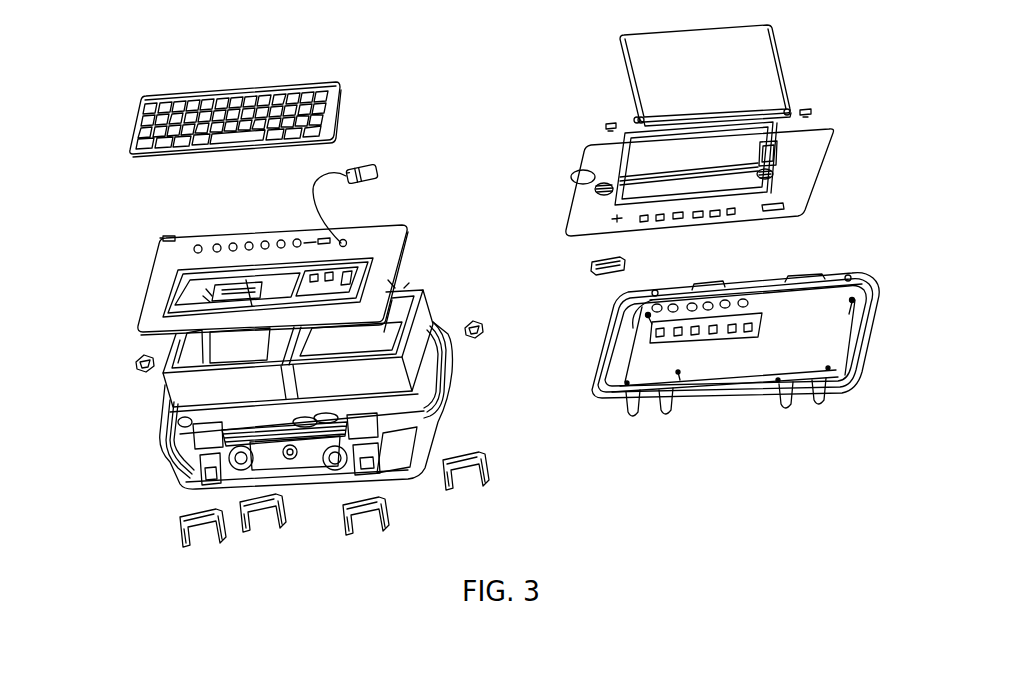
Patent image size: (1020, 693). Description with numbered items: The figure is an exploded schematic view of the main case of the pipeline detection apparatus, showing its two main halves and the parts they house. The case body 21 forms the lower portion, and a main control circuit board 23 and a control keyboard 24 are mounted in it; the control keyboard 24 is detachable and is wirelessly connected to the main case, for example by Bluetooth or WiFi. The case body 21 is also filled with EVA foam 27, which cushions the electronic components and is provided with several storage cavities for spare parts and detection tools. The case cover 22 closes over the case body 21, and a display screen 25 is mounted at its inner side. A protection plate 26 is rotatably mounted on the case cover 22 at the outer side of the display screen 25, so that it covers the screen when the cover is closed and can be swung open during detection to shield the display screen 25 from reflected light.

The case body 21 is at (172, 462).
The case cover 22 is at (838, 346).
The main control circuit board 23 is at (205, 288).
The control keyboard 24 is at (133, 118).
The display screen 25 is at (640, 156).
The protection plate 26 is at (760, 72).
The EVA foam 27 is at (185, 388).